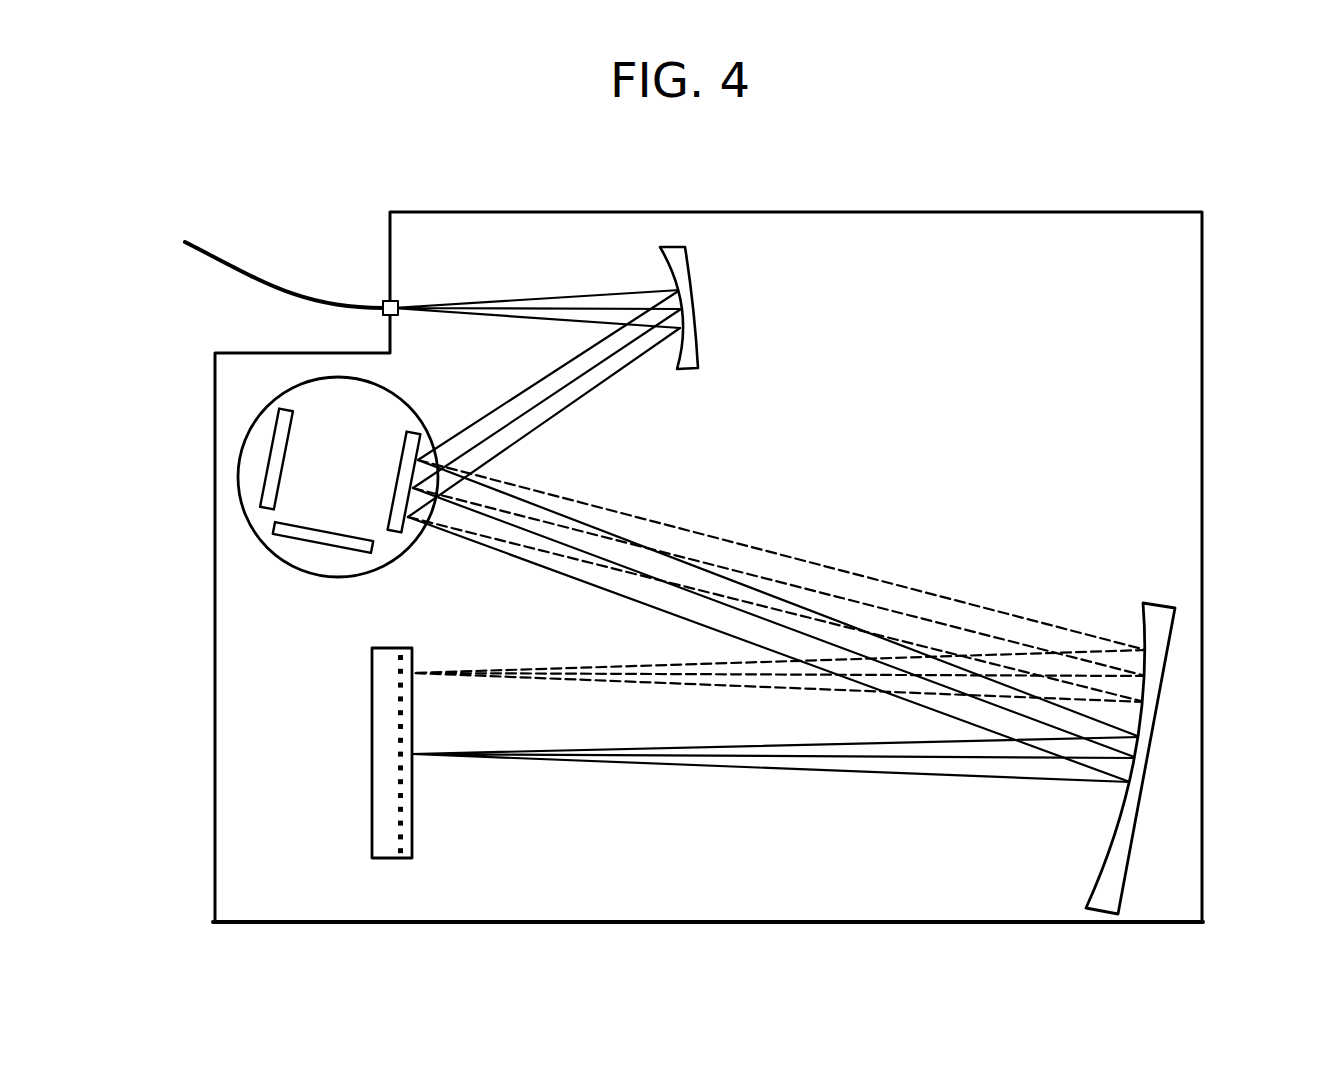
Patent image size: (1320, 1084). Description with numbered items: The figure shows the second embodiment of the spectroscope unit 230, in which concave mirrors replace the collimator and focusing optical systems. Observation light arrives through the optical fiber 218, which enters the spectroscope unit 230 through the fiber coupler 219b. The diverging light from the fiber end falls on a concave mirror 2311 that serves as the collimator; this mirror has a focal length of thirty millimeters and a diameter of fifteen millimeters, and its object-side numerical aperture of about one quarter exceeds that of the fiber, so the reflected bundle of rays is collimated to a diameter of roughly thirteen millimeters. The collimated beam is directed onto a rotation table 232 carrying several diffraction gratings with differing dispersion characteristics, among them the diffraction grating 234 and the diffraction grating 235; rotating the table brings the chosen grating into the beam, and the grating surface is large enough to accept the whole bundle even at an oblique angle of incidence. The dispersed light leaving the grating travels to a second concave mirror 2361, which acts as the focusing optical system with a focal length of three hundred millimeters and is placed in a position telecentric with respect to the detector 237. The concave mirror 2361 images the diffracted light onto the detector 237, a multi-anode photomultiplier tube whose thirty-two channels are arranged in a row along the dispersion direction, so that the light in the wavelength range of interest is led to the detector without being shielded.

The optical fiber 218 is at (217, 265).
The fiber coupler 219b is at (385, 303).
The spectroscope unit 230 is at (1185, 367).
The concave mirror 2311 is at (692, 277).
The rotation table 232 is at (250, 465).
The diffraction grating 234 is at (315, 537).
The diffraction grating 235 is at (263, 478).
The detector 237 is at (390, 779).
The concave mirror 2361 is at (1160, 603).